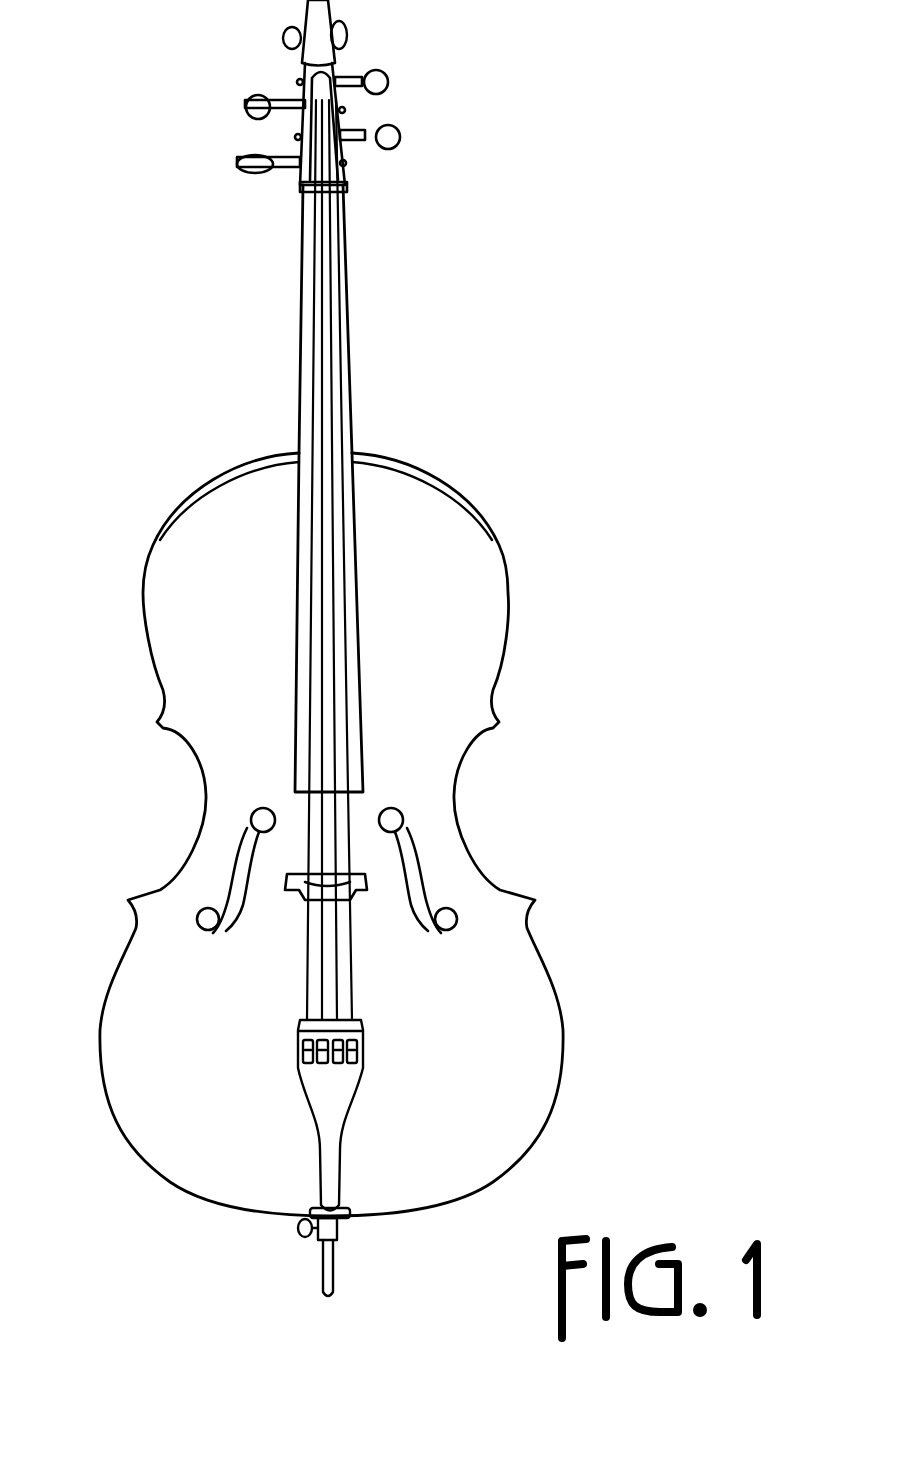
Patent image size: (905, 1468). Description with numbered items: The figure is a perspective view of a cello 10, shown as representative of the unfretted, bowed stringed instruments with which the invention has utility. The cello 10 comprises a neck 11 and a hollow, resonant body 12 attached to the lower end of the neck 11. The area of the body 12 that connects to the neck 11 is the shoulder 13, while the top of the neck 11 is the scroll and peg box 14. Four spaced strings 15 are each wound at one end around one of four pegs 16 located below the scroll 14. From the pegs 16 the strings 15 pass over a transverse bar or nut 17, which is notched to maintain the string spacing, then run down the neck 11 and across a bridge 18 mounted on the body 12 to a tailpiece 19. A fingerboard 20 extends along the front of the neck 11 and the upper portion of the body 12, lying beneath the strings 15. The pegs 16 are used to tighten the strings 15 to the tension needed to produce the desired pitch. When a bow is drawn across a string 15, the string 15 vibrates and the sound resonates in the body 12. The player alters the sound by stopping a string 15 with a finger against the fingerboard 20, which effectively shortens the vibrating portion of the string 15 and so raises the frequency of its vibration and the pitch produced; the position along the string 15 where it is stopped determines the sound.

The cello 10 is at (65, 522).
The neck 11 is at (385, 312).
The body 12 is at (537, 547).
The shoulder 13 is at (407, 428).
The scroll and peg box 14 is at (363, 115).
The strings 15 is at (332, 627).
The pegs 16 is at (180, 130).
The nut 17 is at (390, 227).
The bridge 18 is at (505, 832).
The tailpiece 19 is at (380, 1133).
The fingerboard 20 is at (382, 717).